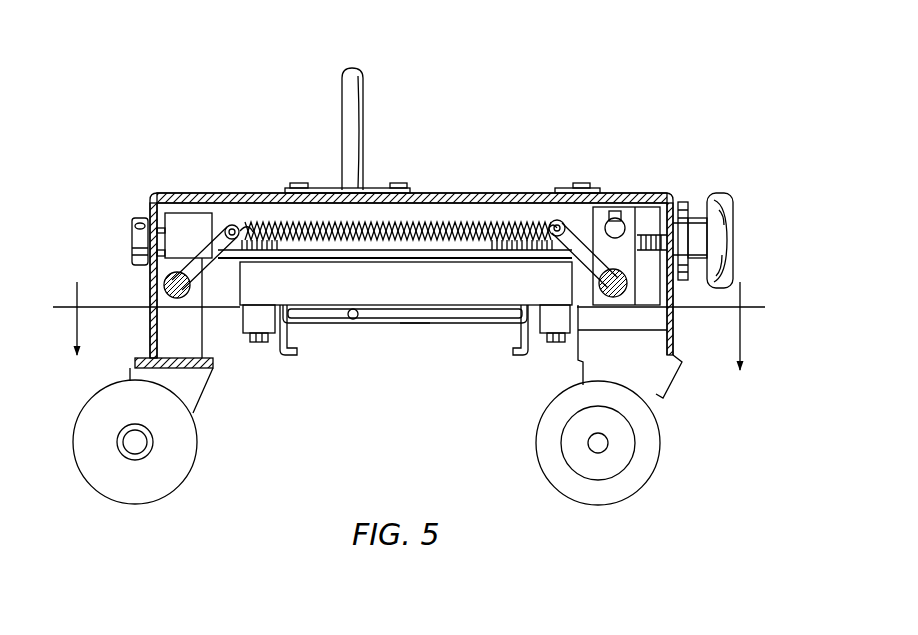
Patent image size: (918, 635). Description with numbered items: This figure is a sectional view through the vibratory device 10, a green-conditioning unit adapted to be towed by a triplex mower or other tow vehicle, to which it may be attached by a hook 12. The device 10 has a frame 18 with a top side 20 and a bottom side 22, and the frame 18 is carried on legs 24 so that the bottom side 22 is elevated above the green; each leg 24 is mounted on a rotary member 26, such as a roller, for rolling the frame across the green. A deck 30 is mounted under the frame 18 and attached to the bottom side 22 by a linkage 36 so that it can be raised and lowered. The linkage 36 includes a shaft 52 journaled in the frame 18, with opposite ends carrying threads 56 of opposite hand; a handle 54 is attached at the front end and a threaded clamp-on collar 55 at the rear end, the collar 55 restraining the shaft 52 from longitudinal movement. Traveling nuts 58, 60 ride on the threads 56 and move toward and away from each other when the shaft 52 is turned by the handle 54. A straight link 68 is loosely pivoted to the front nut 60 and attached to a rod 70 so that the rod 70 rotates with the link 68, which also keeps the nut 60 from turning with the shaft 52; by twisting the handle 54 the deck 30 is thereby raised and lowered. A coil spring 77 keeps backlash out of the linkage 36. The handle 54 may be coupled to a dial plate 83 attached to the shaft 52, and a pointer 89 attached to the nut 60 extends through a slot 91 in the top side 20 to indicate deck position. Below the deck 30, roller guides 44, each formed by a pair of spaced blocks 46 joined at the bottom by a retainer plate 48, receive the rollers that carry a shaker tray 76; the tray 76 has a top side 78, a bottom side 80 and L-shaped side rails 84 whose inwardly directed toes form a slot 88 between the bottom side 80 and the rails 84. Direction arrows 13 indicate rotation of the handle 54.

The vibratory device 10 is at (639, 78).
The hook 12 is at (360, 68).
The rotation direction arrow 13 is at (600, 176).
The frame 18 is at (500, 192).
The top side 20 is at (457, 225).
The bottom side 22 is at (275, 202).
The legs 24 is at (145, 335).
The rotary member 26 is at (190, 474).
The deck 30 is at (238, 292).
The linkage 36 is at (760, 155).
The roller guides 44 is at (556, 346).
The blocks 46 is at (252, 336).
The retainer plate 48 is at (283, 340).
The shaft 52 is at (463, 248).
The handle 54 is at (735, 240).
The clamp-on collar 55 is at (115, 216).
The threads 56 is at (244, 215).
The traveling nut 58 is at (188, 212).
The traveling nut 60 is at (565, 212).
The straight link 68 is at (632, 196).
The rod 70 is at (621, 298).
The shaker tray 76 is at (415, 325).
The coil spring 77 is at (415, 222).
The top side 78 is at (353, 319).
The bottom side 80 is at (473, 324).
The dial plate 83 is at (682, 201).
The side rails 84 is at (528, 332).
The slot 88 is at (302, 338).
The pointer 89 is at (594, 186).
The slot 91 is at (579, 186).